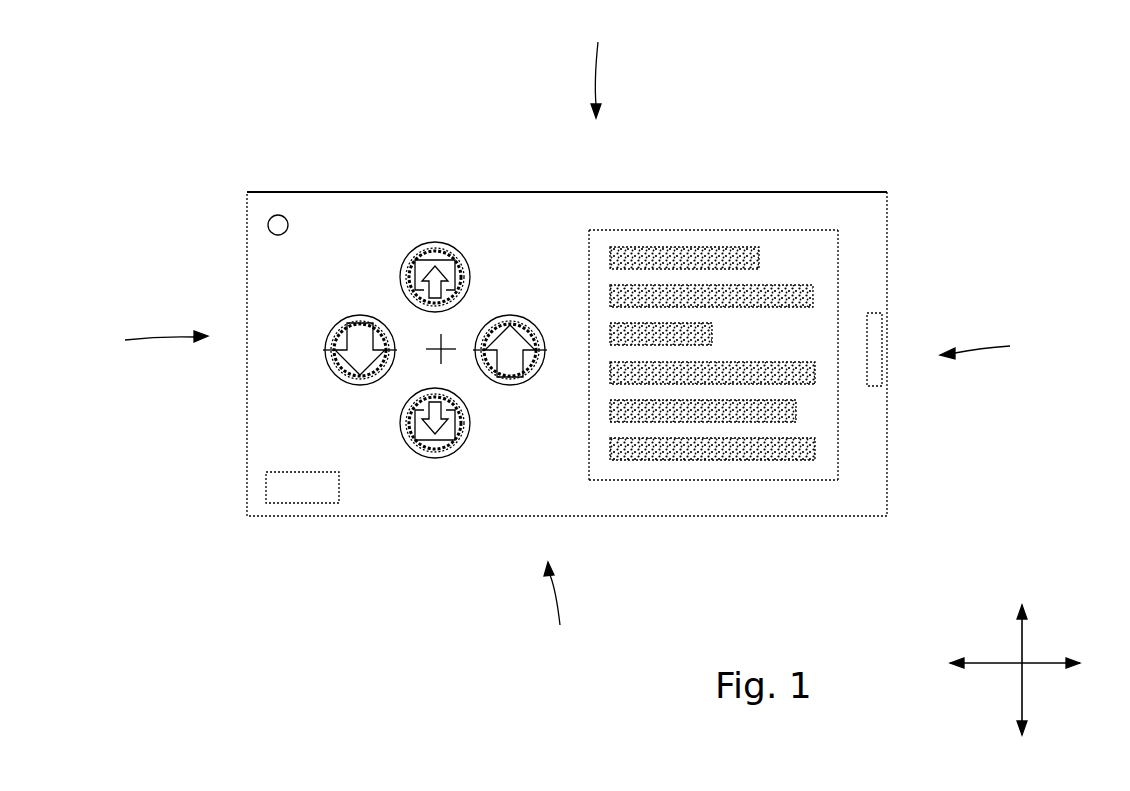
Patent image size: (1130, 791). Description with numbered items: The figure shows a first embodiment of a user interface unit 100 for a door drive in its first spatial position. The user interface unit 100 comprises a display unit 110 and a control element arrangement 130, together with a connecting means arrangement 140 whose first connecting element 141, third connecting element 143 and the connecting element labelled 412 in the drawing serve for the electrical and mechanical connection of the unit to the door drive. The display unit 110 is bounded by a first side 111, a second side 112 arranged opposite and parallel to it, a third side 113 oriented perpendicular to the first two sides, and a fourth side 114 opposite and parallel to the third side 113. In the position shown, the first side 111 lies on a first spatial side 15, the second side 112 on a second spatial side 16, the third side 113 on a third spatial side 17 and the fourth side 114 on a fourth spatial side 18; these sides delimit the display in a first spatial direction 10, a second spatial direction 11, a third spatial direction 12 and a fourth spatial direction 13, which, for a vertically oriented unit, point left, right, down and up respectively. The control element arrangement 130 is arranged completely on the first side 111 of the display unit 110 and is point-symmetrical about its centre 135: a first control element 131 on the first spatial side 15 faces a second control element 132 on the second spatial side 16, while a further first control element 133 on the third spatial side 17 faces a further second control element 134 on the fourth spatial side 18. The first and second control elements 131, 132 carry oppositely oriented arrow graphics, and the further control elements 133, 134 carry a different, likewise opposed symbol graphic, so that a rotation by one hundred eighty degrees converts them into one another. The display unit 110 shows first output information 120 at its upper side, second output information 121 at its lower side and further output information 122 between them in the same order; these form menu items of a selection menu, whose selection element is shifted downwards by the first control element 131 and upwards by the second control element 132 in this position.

The first spatial direction 10 is at (985, 668).
The second spatial direction 11 is at (1045, 660).
The third spatial direction 12 is at (1022, 697).
The fourth spatial direction 13 is at (1020, 645).
The first spatial side 15 is at (148, 339).
The second spatial side 16 is at (994, 345).
The third spatial side 17 is at (563, 611).
The fourth spatial side 18 is at (602, 67).
The user interface unit 100 is at (247, 268).
The display unit 110 is at (808, 230).
The first side 111 is at (589, 420).
The second side 112 is at (855, 438).
The third side 113 is at (700, 490).
The fourth side 114 is at (711, 221).
The first output information 120 is at (669, 250).
The second output information 121 is at (812, 450).
The further output information 122 is at (712, 335).
The control element arrangement 130 is at (352, 232).
The first control element 131 is at (325, 363).
The second control element 132 is at (512, 315).
The further first control element 133 is at (433, 458).
The further second control element 134 is at (435, 242).
The centre 135 is at (443, 352).
The connecting means arrangement 140 is at (574, 398).
The first connecting element 141 is at (272, 222).
The third connecting element 143 is at (877, 330).
The second interface 412 is at (285, 490).